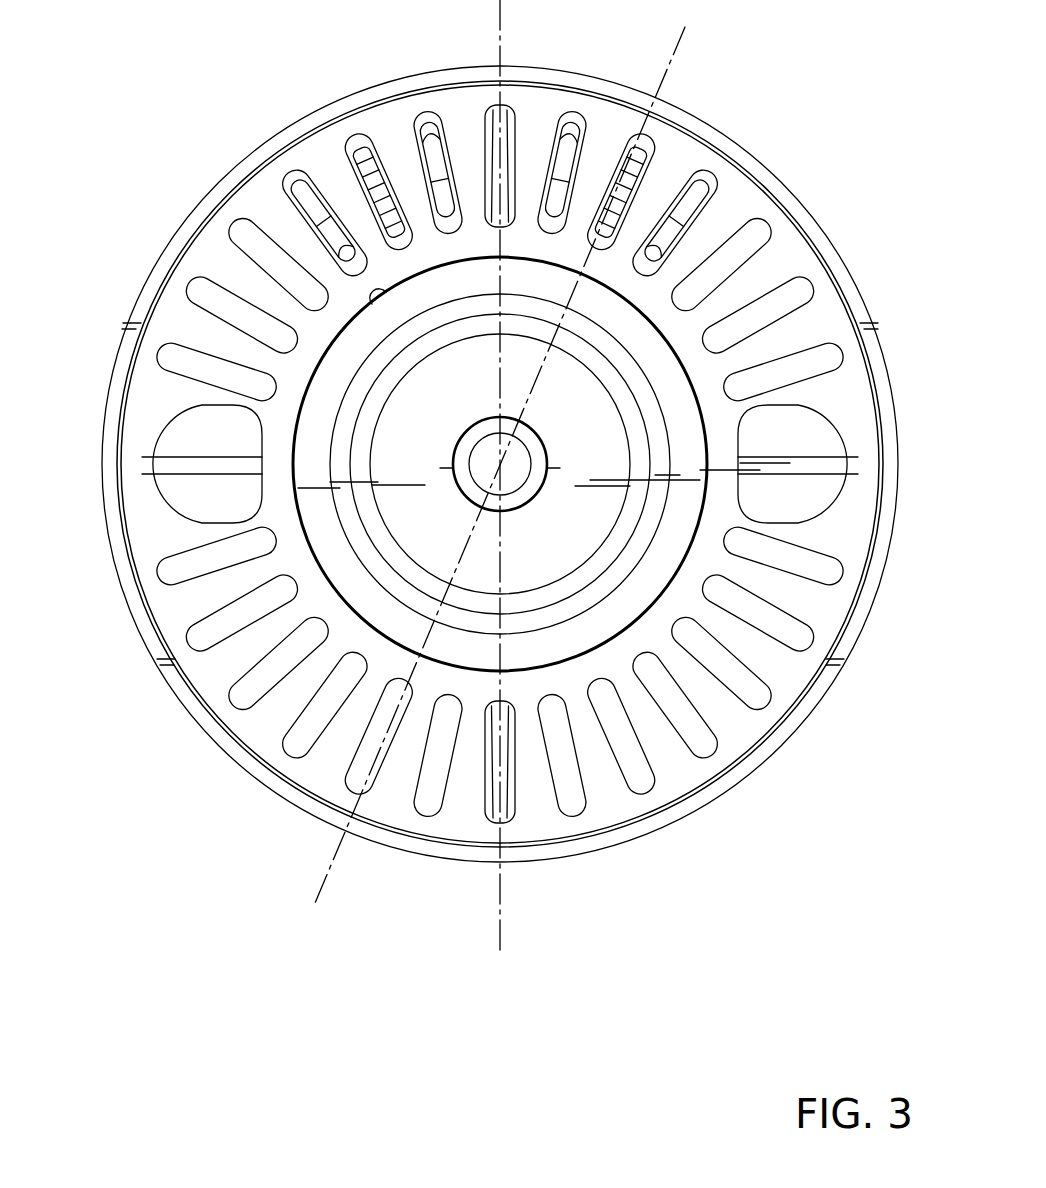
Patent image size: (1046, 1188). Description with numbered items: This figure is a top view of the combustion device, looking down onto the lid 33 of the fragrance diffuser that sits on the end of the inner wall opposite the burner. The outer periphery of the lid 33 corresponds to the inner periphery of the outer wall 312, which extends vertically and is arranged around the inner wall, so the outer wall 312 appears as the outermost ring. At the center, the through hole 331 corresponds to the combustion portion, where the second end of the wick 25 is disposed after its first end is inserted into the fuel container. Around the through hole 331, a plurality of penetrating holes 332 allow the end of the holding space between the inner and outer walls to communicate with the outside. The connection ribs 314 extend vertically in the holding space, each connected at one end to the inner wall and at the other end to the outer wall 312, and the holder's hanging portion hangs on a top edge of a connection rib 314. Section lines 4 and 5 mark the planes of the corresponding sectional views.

The wick 25 is at (513, 460).
The lid 33 is at (748, 733).
The outer wall 312 is at (670, 815).
The connection rib 314 is at (497, 146).
The through hole 331 is at (372, 297).
The penetrating holes 332 is at (353, 138).
The section line 4- 4 is at (555, 6).
The section line 5- 5 is at (708, 46).